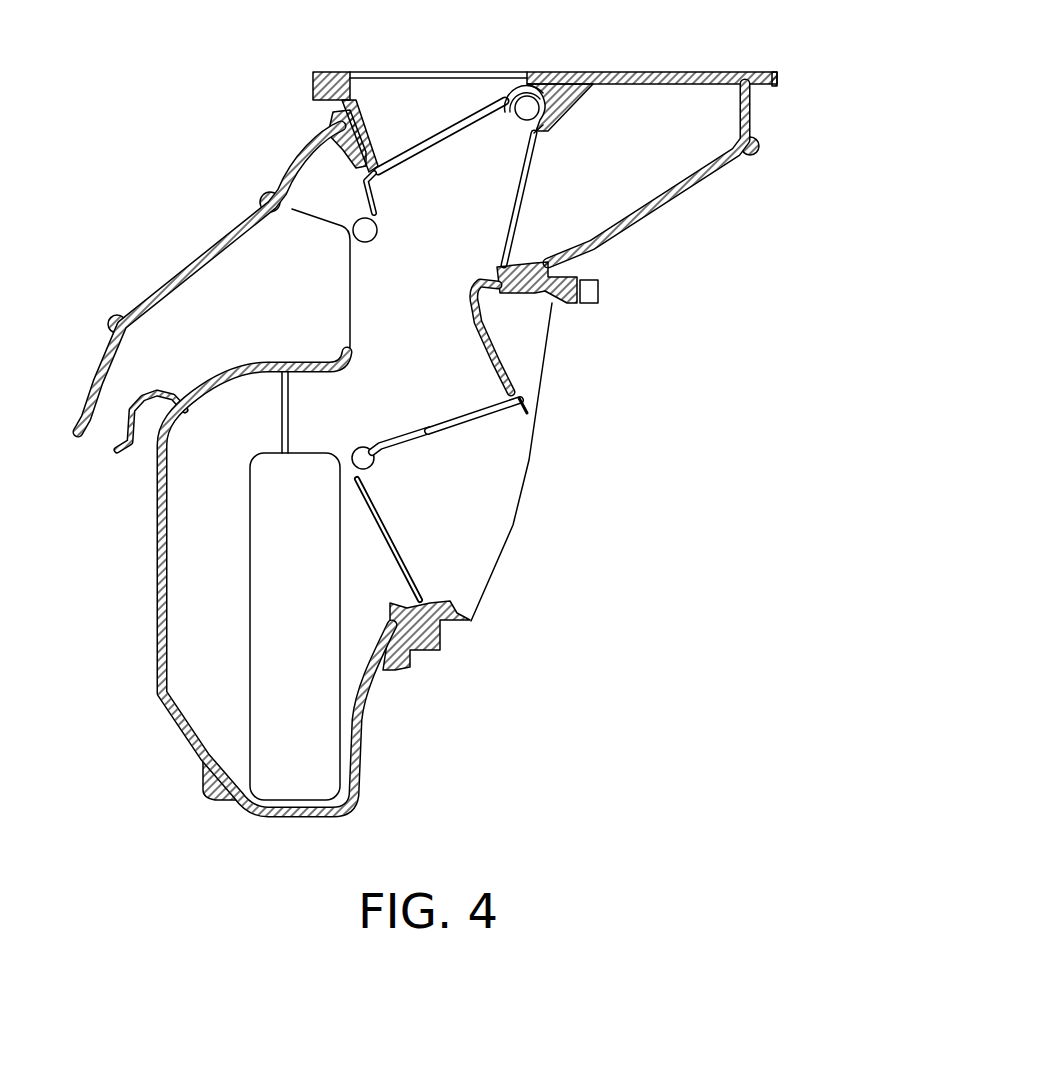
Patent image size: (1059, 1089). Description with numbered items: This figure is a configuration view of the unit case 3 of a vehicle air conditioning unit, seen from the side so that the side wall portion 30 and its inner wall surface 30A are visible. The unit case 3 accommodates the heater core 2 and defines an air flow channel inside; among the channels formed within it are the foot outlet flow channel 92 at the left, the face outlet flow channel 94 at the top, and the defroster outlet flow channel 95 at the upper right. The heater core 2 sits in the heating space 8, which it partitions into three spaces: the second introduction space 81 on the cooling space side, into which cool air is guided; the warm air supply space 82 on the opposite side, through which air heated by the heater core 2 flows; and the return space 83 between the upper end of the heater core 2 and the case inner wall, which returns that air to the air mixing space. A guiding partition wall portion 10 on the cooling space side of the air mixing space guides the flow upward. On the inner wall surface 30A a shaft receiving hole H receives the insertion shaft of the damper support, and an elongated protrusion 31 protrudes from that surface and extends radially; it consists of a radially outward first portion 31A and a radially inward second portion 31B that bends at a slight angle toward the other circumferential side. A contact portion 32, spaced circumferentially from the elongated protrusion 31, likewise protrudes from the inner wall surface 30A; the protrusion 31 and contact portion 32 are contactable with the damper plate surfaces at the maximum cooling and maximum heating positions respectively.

The face outlet flow channel 94 is at (425, 100).
The defroster outlet flow channel 95 is at (630, 120).
The unit case 3 is at (770, 210).
The side wall portion 30 is at (625, 392).
The foot outlet flow channel 92 is at (185, 330).
The guiding partition wall portion 10 is at (497, 343).
The inner wall surface 30A is at (490, 480).
The elongated protrusion 31 is at (484, 391).
The first portion 31A is at (372, 450).
The second portion 31B is at (455, 422).
The shaft receiving hole H is at (375, 465).
The contact portion 32 is at (400, 557).
The heating space 8 is at (225, 582).
The return space 83 is at (257, 415).
The second introduction space 81 is at (363, 557).
The warm air supply space 82 is at (103, 487).
The heater core 2 is at (280, 656).